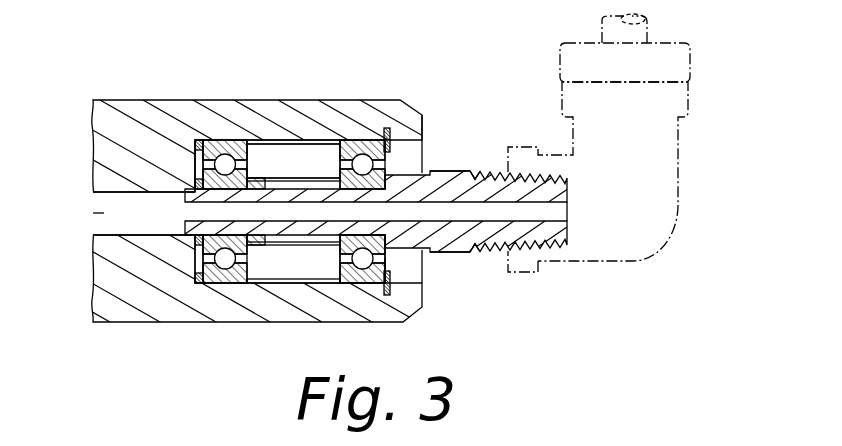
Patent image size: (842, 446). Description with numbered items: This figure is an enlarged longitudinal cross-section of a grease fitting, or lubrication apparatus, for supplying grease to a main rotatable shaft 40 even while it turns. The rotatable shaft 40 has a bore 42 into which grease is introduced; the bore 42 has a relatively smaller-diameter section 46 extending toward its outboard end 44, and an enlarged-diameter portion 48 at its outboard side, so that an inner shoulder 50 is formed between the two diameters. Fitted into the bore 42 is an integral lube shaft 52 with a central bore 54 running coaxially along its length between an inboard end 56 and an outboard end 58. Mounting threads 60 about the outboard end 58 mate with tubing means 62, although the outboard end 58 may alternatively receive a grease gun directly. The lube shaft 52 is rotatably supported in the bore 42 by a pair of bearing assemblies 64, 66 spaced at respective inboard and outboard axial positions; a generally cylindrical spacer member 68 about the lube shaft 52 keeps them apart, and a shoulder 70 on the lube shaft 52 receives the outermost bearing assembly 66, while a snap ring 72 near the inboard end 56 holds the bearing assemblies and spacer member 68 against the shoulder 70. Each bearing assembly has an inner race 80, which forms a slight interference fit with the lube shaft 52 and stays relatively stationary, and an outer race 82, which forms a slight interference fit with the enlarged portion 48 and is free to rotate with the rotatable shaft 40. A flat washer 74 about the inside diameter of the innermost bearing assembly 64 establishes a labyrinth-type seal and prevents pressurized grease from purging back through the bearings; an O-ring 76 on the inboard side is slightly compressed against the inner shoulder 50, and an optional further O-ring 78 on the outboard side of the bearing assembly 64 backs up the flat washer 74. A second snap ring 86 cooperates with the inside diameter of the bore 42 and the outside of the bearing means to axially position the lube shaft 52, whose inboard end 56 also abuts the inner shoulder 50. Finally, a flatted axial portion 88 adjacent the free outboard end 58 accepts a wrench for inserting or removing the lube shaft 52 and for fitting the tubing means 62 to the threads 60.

The rotatable shaft 40 is at (227, 100).
The bore 42 is at (104, 213).
The outboard end 44 is at (433, 151).
The section 46 is at (146, 235).
The portion 48 is at (293, 142).
The inner shoulder 50 is at (193, 163).
The lube shaft 52 is at (341, 244).
The central bore 54 is at (474, 232).
The inboard end 56 is at (186, 204).
The outboard end 58 is at (570, 208).
The mounting threads 60 is at (566, 173).
The tubing means 62 is at (678, 182).
The bearing assembly 64 is at (243, 283).
The bearing assembly 66 is at (350, 280).
The spacer member 68 is at (277, 173).
The shoulder 70 is at (386, 259).
The snap ring 72 is at (195, 240).
The flat washer 74 is at (197, 278).
The O-ring 76 is at (194, 141).
The O-ring 78 is at (263, 245).
The inner race 80 is at (233, 196).
The outer race 82 is at (250, 142).
The snap ring 86 is at (390, 287).
The flatted axial portion 88 is at (438, 171).